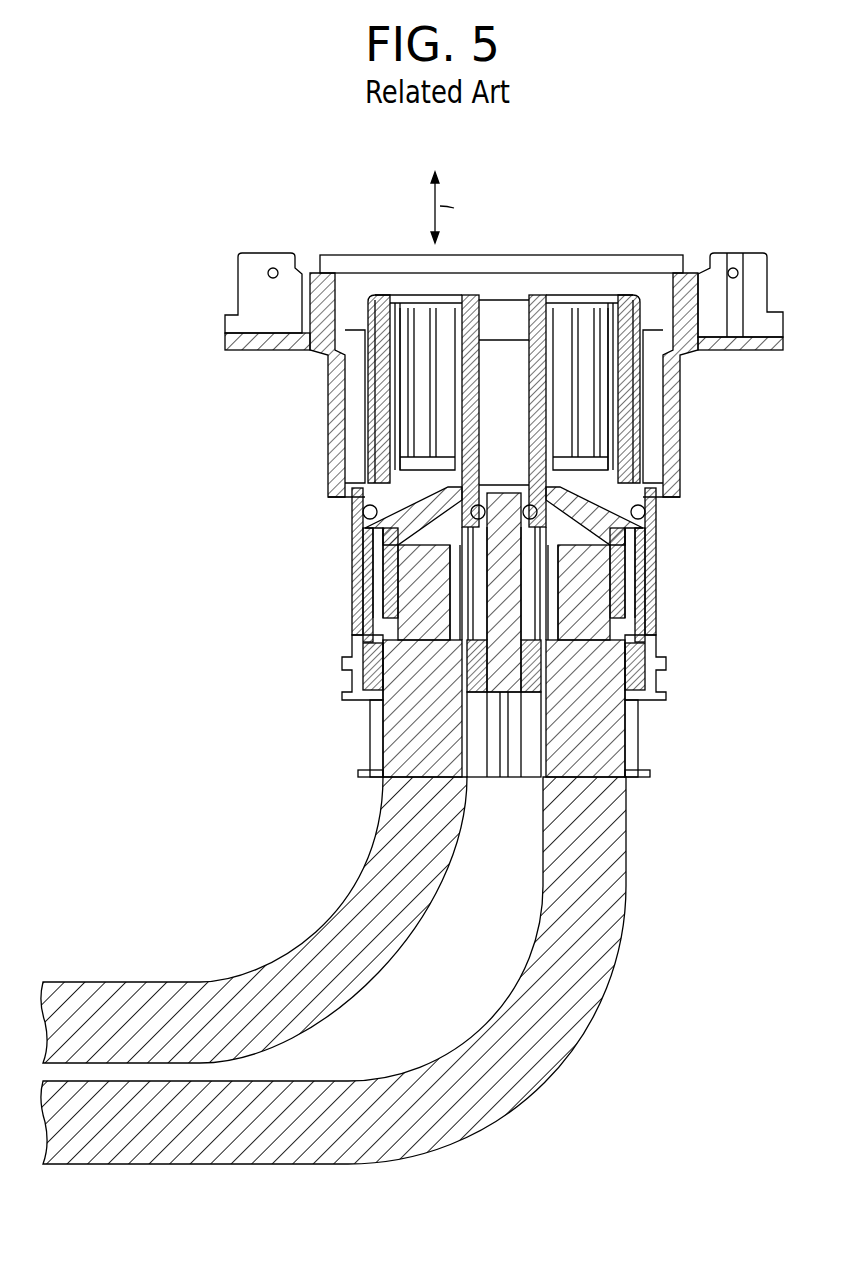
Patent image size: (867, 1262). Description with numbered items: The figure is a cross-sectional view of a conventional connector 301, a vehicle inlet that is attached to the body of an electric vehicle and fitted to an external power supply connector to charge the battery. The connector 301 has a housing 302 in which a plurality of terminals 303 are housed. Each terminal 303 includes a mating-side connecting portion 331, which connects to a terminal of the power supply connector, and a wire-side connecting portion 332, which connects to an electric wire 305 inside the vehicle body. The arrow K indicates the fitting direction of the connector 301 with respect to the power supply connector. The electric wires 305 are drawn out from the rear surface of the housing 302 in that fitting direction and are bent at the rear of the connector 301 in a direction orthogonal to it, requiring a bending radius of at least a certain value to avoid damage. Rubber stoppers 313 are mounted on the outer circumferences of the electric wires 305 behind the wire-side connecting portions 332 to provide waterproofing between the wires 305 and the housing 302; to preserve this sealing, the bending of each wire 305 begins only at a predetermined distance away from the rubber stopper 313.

The connector 301 is at (725, 194).
The housing 302 is at (683, 398).
The terminal 303 is at (462, 429).
The mating-side connecting portion 331 is at (368, 397).
The wire-side connecting portion 332 is at (355, 573).
The rubber stopper 313 is at (345, 656).
The electric wire 305 is at (222, 1078).